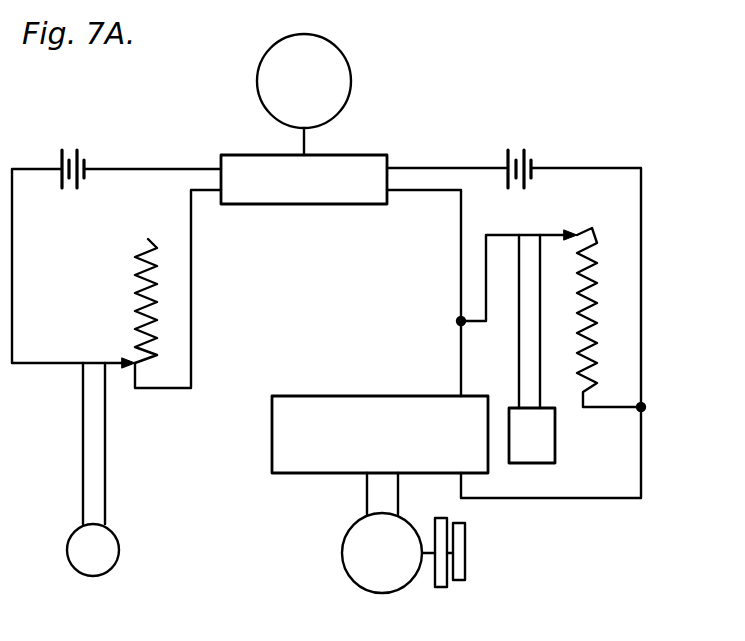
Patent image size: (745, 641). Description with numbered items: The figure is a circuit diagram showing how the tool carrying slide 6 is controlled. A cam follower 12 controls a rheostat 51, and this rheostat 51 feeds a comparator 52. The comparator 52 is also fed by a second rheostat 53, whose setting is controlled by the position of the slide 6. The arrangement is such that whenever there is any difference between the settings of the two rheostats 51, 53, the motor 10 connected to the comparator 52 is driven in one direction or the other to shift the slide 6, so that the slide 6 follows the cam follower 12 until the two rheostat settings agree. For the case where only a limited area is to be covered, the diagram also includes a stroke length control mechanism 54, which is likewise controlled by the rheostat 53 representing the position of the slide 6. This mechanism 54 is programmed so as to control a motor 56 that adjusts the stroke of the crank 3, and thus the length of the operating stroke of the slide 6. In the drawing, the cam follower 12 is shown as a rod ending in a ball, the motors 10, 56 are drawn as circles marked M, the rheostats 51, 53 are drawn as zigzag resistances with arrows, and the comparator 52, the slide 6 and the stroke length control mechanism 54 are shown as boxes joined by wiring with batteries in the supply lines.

The crank 3 is at (437, 590).
The slide 6 is at (555, 438).
The motor 10 is at (351, 83).
The cam follower 12 is at (97, 498).
The rheostat 51 is at (134, 285).
The comparator 52 is at (347, 197).
The rheostat 53 is at (597, 330).
The stroke length control mechanism 54 is at (370, 386).
The motor 56 is at (360, 588).